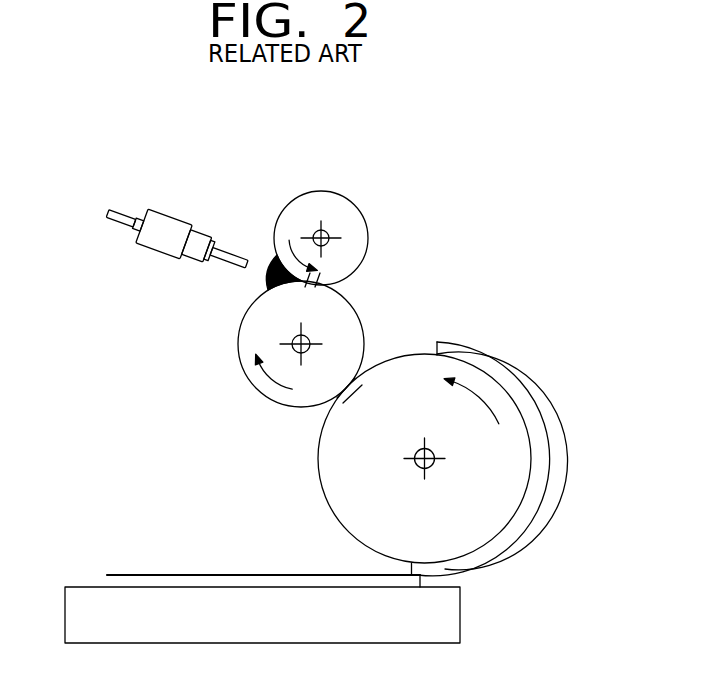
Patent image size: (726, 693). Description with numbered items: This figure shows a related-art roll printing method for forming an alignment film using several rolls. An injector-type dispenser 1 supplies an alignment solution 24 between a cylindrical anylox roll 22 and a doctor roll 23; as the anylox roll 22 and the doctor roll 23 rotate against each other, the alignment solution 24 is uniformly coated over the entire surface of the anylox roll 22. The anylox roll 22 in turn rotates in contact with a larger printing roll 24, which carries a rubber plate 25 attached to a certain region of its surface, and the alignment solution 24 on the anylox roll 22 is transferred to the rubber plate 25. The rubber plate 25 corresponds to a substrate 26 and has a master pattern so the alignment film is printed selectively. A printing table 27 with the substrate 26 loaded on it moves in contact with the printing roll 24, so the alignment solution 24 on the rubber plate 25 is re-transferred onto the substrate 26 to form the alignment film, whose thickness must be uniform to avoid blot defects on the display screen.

The dispenser 1 is at (160, 211).
The anylox roll 22 is at (248, 358).
The doctor roll 23 is at (338, 203).
The alignment solution 24 is at (268, 268).
The rubber plate 25 is at (543, 444).
The substrate 26 is at (106, 580).
The printing table 27 is at (73, 611).